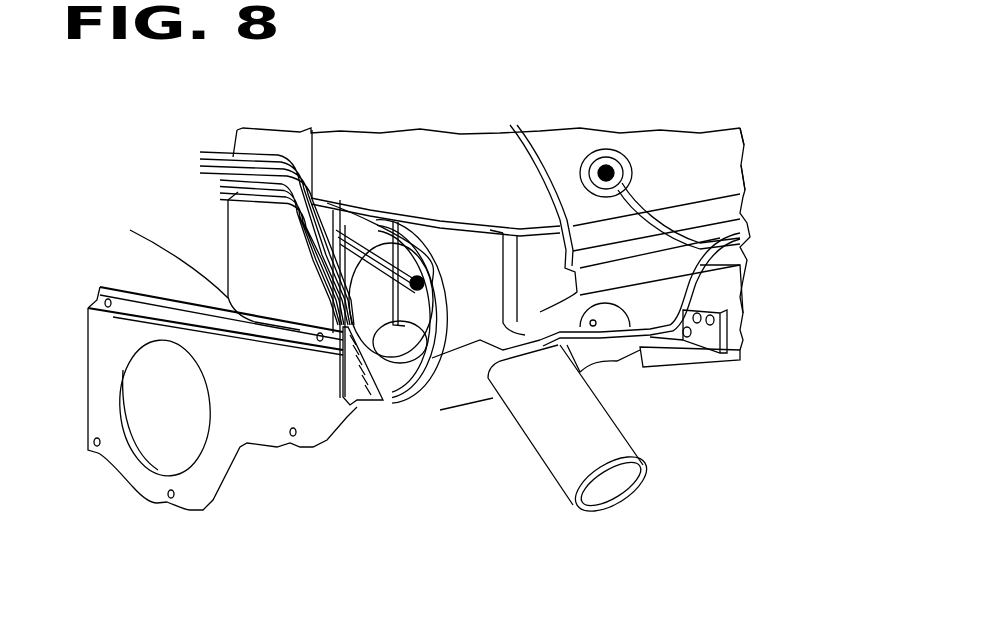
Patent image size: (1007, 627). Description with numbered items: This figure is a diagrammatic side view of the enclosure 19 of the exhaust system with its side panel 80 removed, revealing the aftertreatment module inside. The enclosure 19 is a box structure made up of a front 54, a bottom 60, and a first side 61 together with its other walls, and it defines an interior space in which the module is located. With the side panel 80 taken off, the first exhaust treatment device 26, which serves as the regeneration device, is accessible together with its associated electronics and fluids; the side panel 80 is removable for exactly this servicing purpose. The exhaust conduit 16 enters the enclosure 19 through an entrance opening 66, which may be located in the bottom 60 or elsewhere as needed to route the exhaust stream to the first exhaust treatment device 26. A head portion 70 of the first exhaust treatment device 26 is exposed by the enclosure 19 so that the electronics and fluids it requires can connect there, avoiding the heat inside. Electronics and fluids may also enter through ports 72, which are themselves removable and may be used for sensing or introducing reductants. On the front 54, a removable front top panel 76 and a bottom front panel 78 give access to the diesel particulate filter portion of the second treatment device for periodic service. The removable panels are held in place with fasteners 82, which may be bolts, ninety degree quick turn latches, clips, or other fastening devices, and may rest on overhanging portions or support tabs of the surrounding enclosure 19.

The exhaust conduit 16 is at (572, 483).
The enclosure 19 is at (660, 112).
The first exhaust treatment device 26 is at (393, 383).
The front 54 is at (745, 157).
The bottom 60 is at (630, 377).
The first side 61 is at (431, 181).
The entrance opening 66 is at (490, 375).
The head portion 70 is at (425, 398).
The ports 72 is at (595, 160).
The front top panel 76 is at (745, 128).
The bottom front panel 78 is at (723, 286).
The side panel 80 is at (105, 343).
The fasteners 82 is at (100, 288).